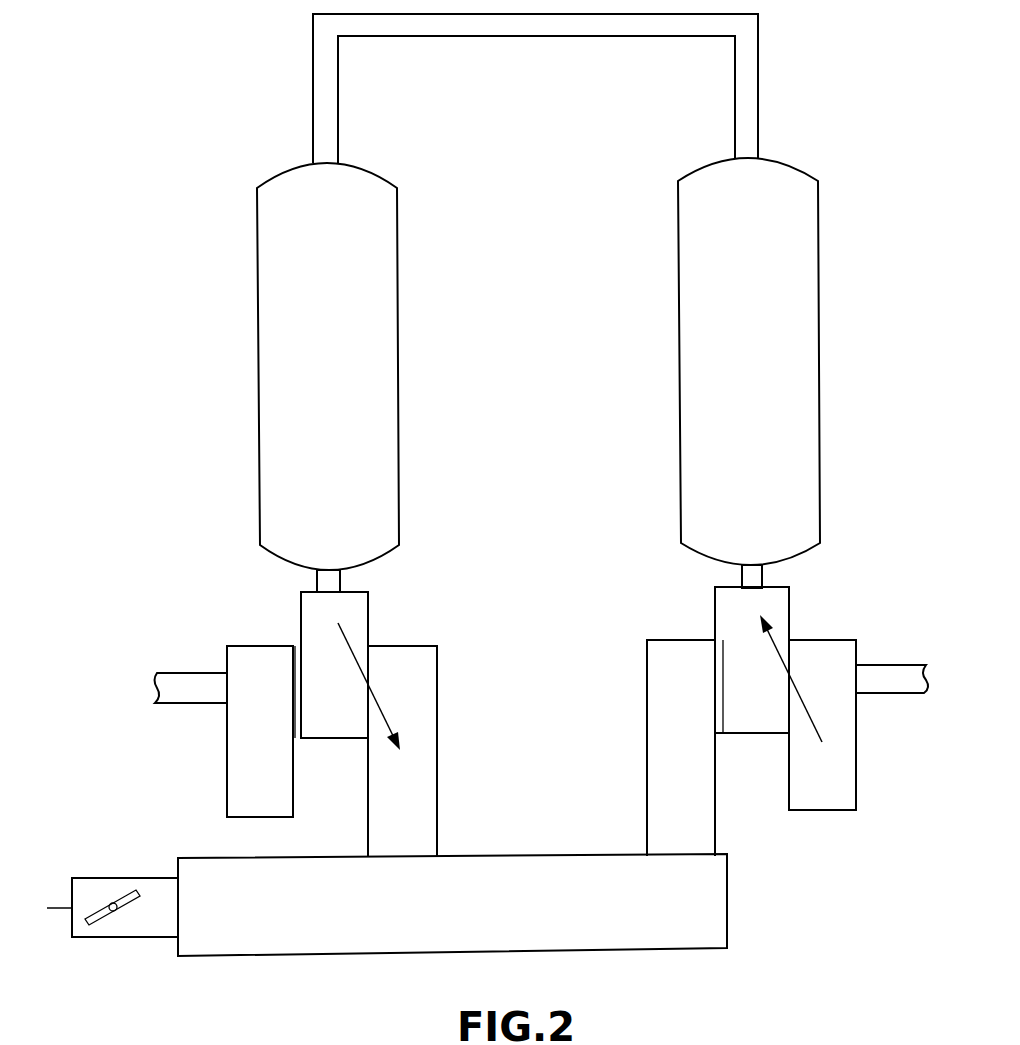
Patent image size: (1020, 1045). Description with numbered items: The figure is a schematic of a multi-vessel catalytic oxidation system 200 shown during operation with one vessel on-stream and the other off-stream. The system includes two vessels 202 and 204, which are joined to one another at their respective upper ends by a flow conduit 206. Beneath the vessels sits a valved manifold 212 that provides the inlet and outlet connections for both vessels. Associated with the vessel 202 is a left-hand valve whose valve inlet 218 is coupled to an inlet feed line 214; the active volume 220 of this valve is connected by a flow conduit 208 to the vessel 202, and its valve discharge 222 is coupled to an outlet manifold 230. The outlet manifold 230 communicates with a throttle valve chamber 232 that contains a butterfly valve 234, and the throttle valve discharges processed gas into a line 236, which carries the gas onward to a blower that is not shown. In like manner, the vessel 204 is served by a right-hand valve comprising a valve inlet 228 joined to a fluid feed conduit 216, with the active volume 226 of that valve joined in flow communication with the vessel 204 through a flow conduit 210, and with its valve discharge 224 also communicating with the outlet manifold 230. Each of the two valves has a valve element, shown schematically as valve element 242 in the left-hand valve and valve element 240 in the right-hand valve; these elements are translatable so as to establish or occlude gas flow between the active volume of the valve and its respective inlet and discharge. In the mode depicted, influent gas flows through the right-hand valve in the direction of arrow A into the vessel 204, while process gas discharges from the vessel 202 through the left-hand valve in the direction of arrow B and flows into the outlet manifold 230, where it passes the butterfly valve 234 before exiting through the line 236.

The multi-vessel catalytic oxidation system 200 is at (252, 118).
The vessel 202 is at (398, 320).
The vessel 204 is at (679, 282).
The flow conduit 206 is at (398, 38).
The flow conduit 208 is at (335, 583).
The flow conduit 210 is at (755, 580).
The valved manifold 212 is at (805, 866).
The inlet feed line 214 is at (192, 672).
The fluid feed conduit 216 is at (878, 668).
The valve inlet 218 is at (227, 768).
The active volume 220 is at (360, 628).
The valve discharge 222 is at (440, 700).
The valve discharge 224 is at (647, 718).
The active volume 226 is at (715, 605).
The valve inlet 228 is at (852, 770).
The outlet manifold 230 is at (403, 947).
The throttle valve chamber 232 is at (120, 938).
The butterfly valve 234 is at (137, 892).
The line 236 is at (63, 908).
The valve element 240 is at (723, 713).
The valve element 242 is at (298, 717).